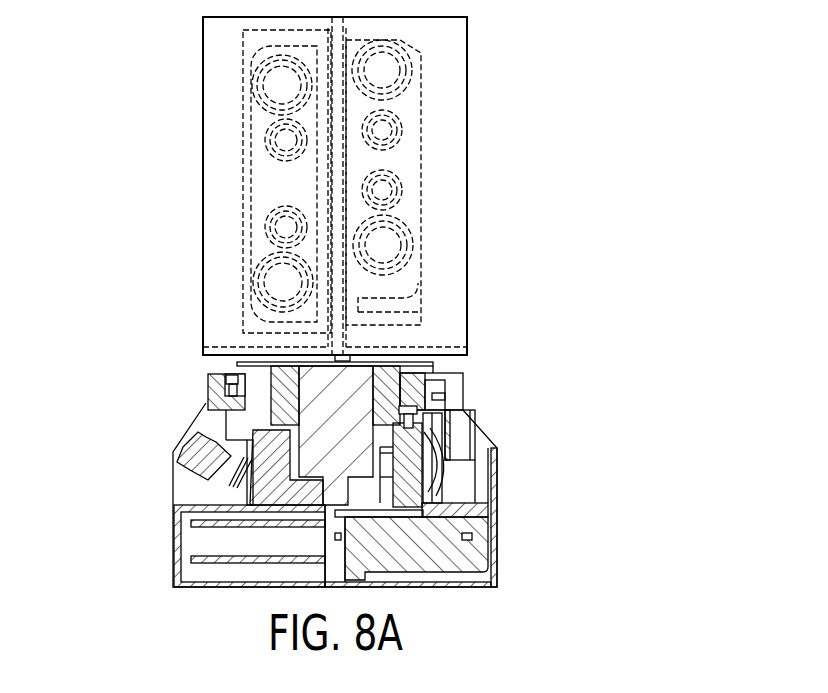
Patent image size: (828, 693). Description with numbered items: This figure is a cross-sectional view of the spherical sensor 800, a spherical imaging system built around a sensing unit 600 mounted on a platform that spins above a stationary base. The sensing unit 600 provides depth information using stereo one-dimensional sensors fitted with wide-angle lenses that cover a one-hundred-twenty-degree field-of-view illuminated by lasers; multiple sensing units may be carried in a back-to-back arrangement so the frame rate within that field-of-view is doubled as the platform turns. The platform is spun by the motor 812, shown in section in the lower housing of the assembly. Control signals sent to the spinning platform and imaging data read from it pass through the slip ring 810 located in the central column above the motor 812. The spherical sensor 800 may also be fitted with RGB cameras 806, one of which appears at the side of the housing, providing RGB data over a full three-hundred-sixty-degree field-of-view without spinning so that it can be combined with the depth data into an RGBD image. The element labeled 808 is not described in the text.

The spherical sensor 800 is at (600, 97).
The sensing unit 600 is at (422, 198).
The RGB camera 806 is at (187, 445).
The spring 808 is at (242, 488).
The slip ring 810 is at (357, 412).
The motor 812 is at (450, 553).